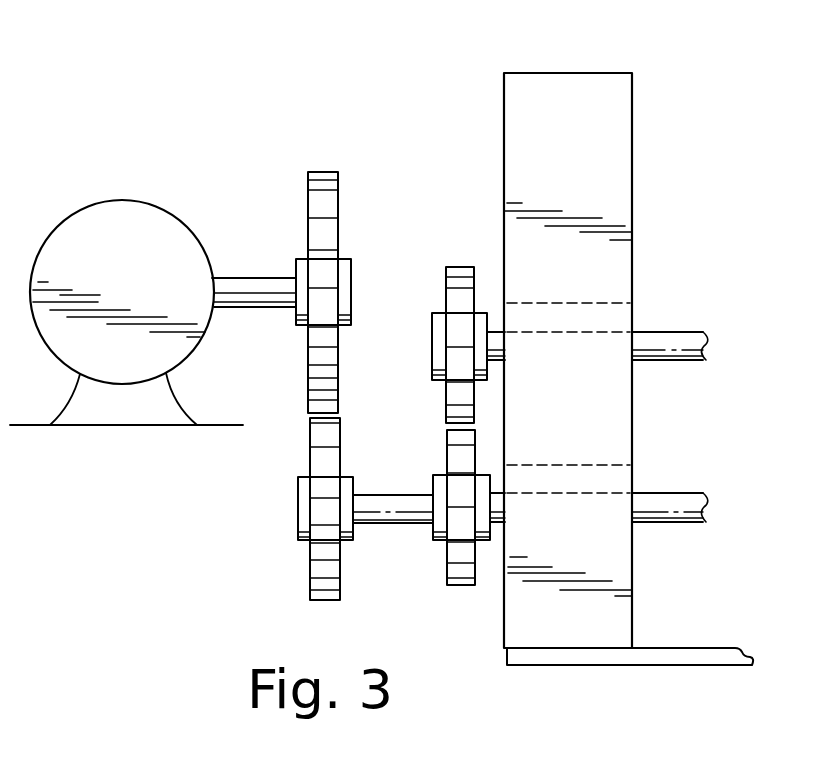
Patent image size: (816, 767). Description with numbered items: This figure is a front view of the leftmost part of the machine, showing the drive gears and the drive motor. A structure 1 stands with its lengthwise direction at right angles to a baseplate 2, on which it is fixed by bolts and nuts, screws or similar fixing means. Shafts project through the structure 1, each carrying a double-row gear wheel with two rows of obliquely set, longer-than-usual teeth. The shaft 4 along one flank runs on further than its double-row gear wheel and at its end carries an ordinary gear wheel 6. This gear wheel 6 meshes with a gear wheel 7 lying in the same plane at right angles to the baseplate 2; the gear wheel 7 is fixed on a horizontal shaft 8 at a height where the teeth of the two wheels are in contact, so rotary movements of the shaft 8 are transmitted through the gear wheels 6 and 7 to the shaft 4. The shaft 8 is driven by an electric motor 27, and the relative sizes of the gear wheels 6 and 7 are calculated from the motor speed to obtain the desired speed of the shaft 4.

The structure 1 is at (557, 72).
The baseplate 2 is at (677, 647).
The shaft 4 is at (393, 546).
The gear wheel 6 is at (340, 432).
The gear wheel 7 is at (338, 207).
The horizontal shaft 8 is at (256, 277).
The electric motor 27 is at (104, 200).